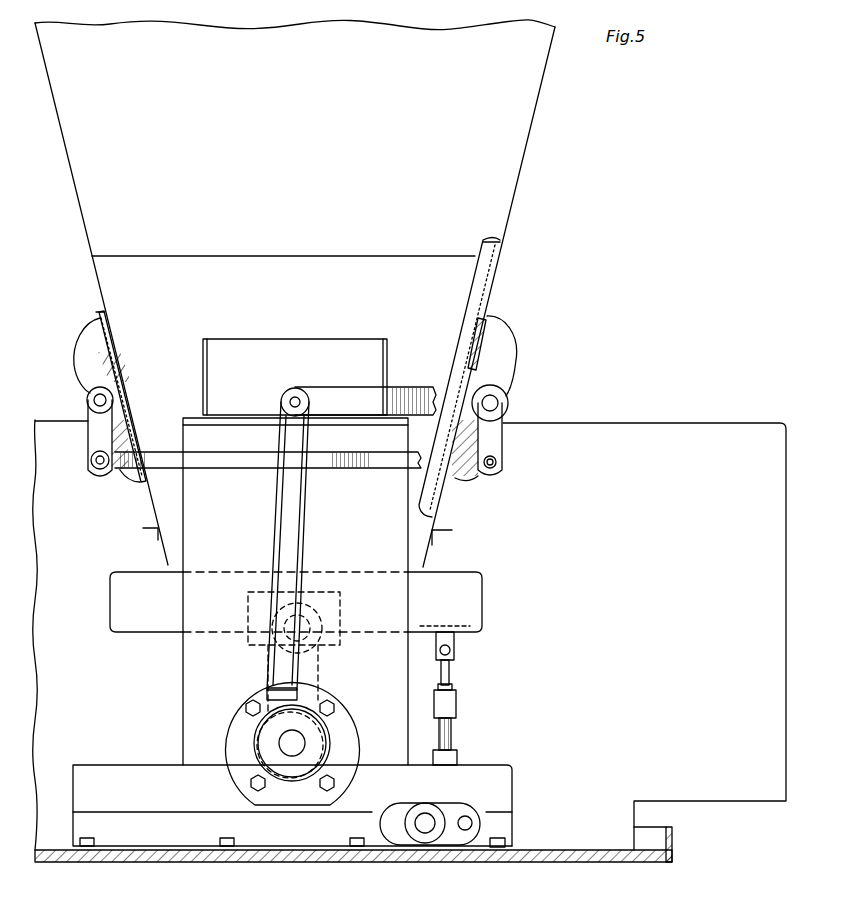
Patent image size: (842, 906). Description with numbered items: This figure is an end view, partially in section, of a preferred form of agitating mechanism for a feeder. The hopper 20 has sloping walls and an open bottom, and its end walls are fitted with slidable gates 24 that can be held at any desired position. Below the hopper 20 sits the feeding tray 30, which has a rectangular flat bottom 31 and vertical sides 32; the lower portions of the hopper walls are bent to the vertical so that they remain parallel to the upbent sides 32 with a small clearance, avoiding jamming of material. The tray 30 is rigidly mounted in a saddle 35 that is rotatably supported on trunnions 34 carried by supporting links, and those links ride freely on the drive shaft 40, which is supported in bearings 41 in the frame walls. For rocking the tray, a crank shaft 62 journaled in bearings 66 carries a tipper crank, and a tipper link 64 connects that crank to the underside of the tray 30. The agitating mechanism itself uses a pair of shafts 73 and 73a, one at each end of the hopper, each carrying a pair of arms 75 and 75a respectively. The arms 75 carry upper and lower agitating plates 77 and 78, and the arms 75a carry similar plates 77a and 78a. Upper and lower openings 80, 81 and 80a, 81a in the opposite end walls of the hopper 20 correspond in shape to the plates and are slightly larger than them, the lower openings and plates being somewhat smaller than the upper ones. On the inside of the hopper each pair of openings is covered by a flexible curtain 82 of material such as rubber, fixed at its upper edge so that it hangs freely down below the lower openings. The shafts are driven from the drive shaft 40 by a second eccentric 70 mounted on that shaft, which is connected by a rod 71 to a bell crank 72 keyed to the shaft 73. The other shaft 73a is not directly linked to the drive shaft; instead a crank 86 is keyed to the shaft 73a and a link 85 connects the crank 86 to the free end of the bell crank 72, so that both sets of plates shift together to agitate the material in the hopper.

The hopper 20 is at (510, 202).
The slidable gate 24 is at (143, 535).
The feeding tray 30 is at (484, 598).
The flat bottom 31 is at (470, 625).
The vertical side 32 is at (112, 578).
The trunnion 34 is at (318, 640).
The saddle 35 is at (340, 603).
The drive shaft 40 is at (290, 743).
The bearing 41 is at (352, 746).
The crank shaft 62 is at (424, 838).
The tipper link 64 is at (452, 672).
The bearing 66 is at (462, 842).
The second eccentric 70 is at (240, 746).
The rod 71 is at (283, 516).
The bell crank 72 is at (510, 401).
The shaft 73 is at (512, 372).
The shaft 73a is at (99, 392).
The arm 75 is at (507, 330).
The arm 75a is at (88, 338).
The upper agitating plate 77 is at (487, 312).
The upper agitating plate 77a is at (96, 312).
The lower agitating plate 78 is at (453, 483).
The lower agitating plate 78a is at (138, 482).
The upper opening 80 is at (472, 310).
The upper opening 80a is at (100, 300).
The lower opening 81 is at (436, 498).
The lower opening 81a is at (144, 497).
The curtain 82 is at (478, 327).
The link 85 is at (350, 468).
The crank 86 is at (98, 452).